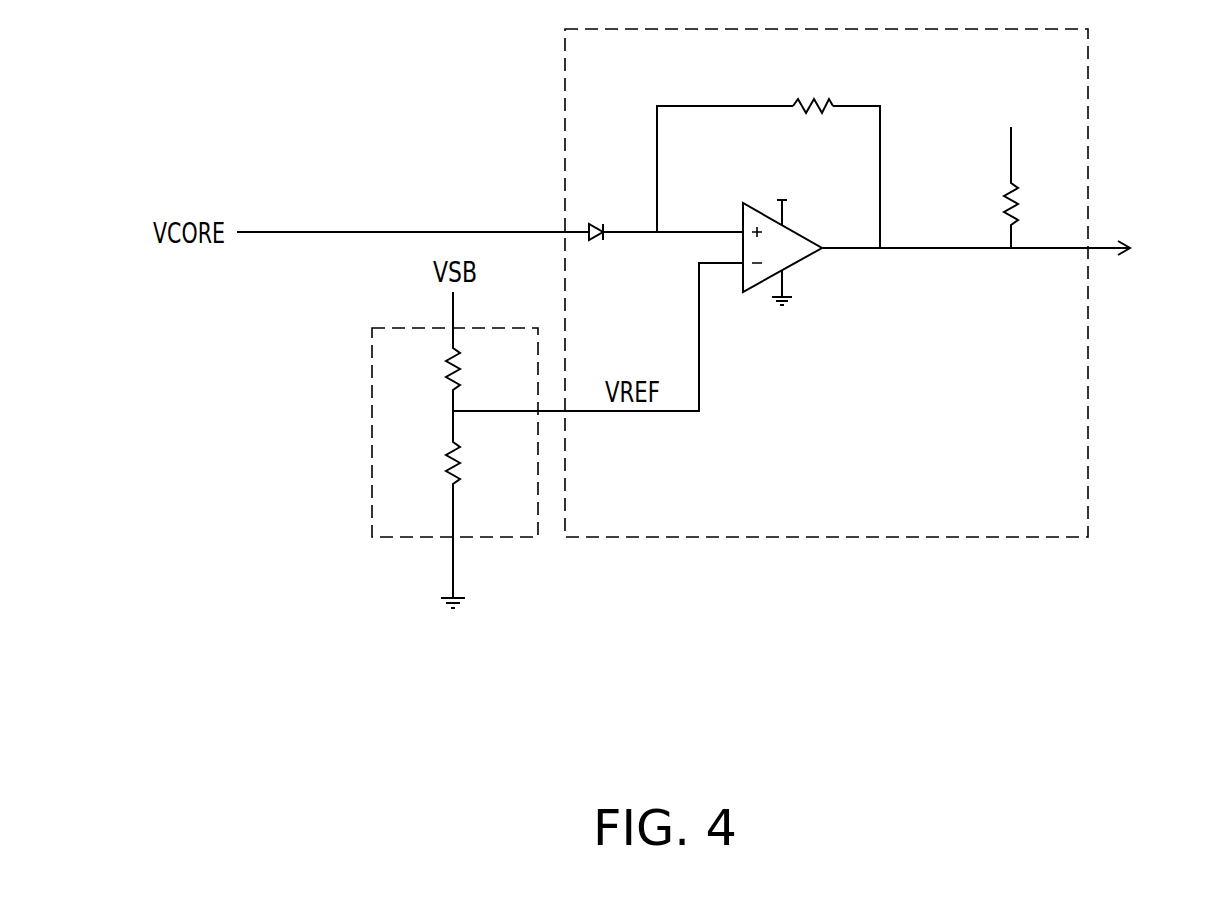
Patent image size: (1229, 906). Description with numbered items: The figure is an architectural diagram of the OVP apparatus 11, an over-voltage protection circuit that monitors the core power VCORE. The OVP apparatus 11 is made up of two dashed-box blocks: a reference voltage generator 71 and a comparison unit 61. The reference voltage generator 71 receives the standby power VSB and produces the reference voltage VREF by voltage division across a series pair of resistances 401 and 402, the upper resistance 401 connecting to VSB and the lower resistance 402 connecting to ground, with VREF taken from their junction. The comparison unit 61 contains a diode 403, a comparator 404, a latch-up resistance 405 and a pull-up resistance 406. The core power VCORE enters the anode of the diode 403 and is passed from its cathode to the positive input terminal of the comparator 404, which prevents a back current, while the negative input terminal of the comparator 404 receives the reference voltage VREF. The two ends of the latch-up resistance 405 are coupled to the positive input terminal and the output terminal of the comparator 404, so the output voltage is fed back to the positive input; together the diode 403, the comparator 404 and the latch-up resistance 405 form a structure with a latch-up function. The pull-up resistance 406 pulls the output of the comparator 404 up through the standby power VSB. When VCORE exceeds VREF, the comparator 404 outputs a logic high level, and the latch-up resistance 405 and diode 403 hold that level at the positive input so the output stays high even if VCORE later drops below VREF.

The OVP apparatus 11 is at (1187, 565).
The comparison unit 61 is at (750, 539).
The reference voltage generator 71 is at (372, 460).
The resistance 401 is at (462, 366).
The resistance 402 is at (460, 463).
The diode 403 is at (597, 243).
The comparator 404 is at (753, 300).
The latch-up resistance 405 is at (801, 95).
The pull-up resistance 406 is at (1003, 217).